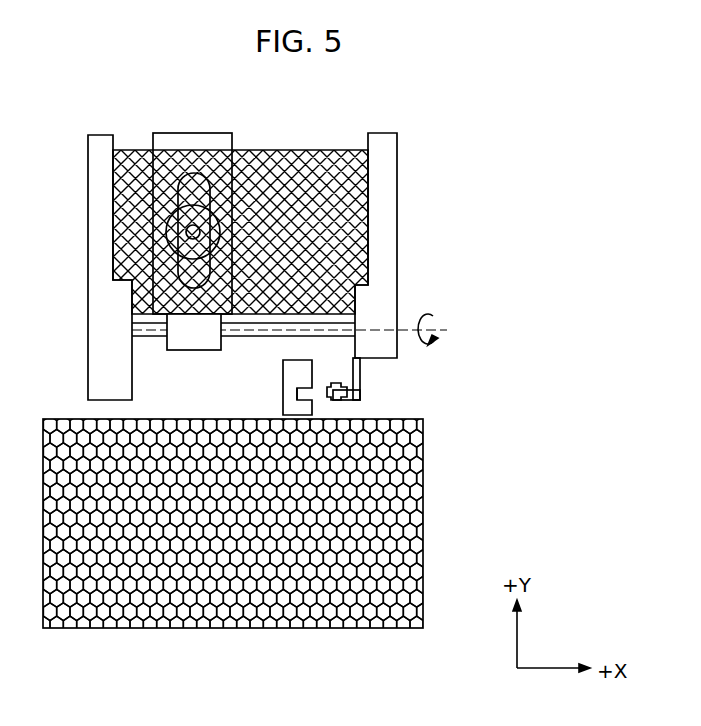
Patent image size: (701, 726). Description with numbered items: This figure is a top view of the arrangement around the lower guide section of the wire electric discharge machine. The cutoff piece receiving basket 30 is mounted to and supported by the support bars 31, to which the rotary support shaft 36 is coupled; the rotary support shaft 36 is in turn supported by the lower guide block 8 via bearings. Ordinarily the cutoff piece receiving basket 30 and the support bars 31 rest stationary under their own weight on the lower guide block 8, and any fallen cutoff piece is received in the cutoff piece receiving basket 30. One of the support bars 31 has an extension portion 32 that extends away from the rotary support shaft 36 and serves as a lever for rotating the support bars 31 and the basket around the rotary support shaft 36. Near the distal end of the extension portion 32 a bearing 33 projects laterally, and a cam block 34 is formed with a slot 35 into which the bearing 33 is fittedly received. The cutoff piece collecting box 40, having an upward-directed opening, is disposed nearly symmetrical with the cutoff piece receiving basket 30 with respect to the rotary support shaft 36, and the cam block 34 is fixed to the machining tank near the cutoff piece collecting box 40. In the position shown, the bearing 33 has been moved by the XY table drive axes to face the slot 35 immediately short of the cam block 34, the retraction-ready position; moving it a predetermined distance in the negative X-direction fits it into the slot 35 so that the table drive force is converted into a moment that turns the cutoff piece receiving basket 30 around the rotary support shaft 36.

The lower guide block 8 is at (193, 140).
The cutoff piece receiving basket 30 is at (347, 180).
The support bars 31 is at (380, 322).
The extension portion 32 is at (361, 378).
The bearing 33 is at (335, 380).
The cam block 34 is at (283, 377).
The slot 35 is at (312, 395).
The rotary support shaft 36 is at (152, 337).
The cutoff piece collecting box 40 is at (412, 520).